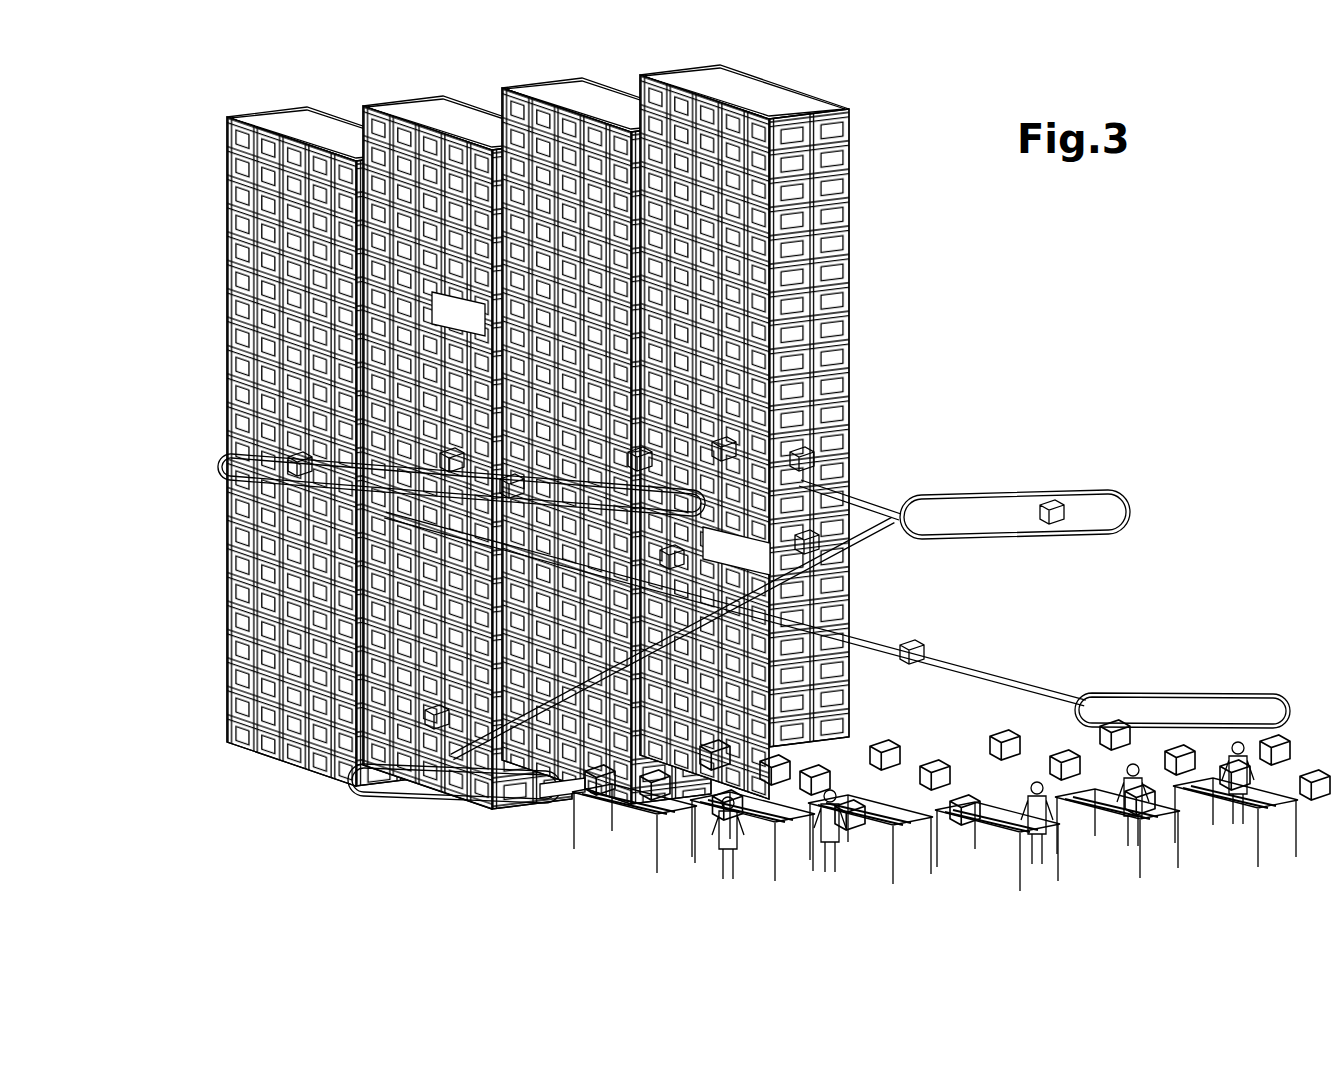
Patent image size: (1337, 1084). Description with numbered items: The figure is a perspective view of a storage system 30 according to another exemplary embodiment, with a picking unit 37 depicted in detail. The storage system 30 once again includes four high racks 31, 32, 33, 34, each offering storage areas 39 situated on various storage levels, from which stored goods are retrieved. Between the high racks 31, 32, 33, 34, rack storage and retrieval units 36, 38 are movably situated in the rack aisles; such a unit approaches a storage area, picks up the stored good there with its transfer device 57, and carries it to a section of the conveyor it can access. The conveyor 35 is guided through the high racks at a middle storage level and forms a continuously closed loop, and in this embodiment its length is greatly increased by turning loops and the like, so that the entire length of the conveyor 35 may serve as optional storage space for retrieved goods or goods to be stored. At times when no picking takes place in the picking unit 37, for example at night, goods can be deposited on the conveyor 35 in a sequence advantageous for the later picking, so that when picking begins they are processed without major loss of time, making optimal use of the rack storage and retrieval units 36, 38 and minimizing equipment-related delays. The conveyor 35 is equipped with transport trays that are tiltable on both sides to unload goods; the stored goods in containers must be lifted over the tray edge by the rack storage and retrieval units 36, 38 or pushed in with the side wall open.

The storage system 30 is at (1142, 437).
The high rack 31 is at (264, 104).
The high rack 32 is at (383, 86).
The high rack 33 is at (527, 76).
The high rack 34 is at (676, 63).
The conveyor 35 is at (985, 492).
The rack storage and retrieval unit 36 is at (228, 365).
The picking unit 37 is at (557, 847).
The rack storage and retrieval unit 38 is at (853, 458).
The storage areas 39 is at (842, 178).
The transfer device 57 is at (709, 583).